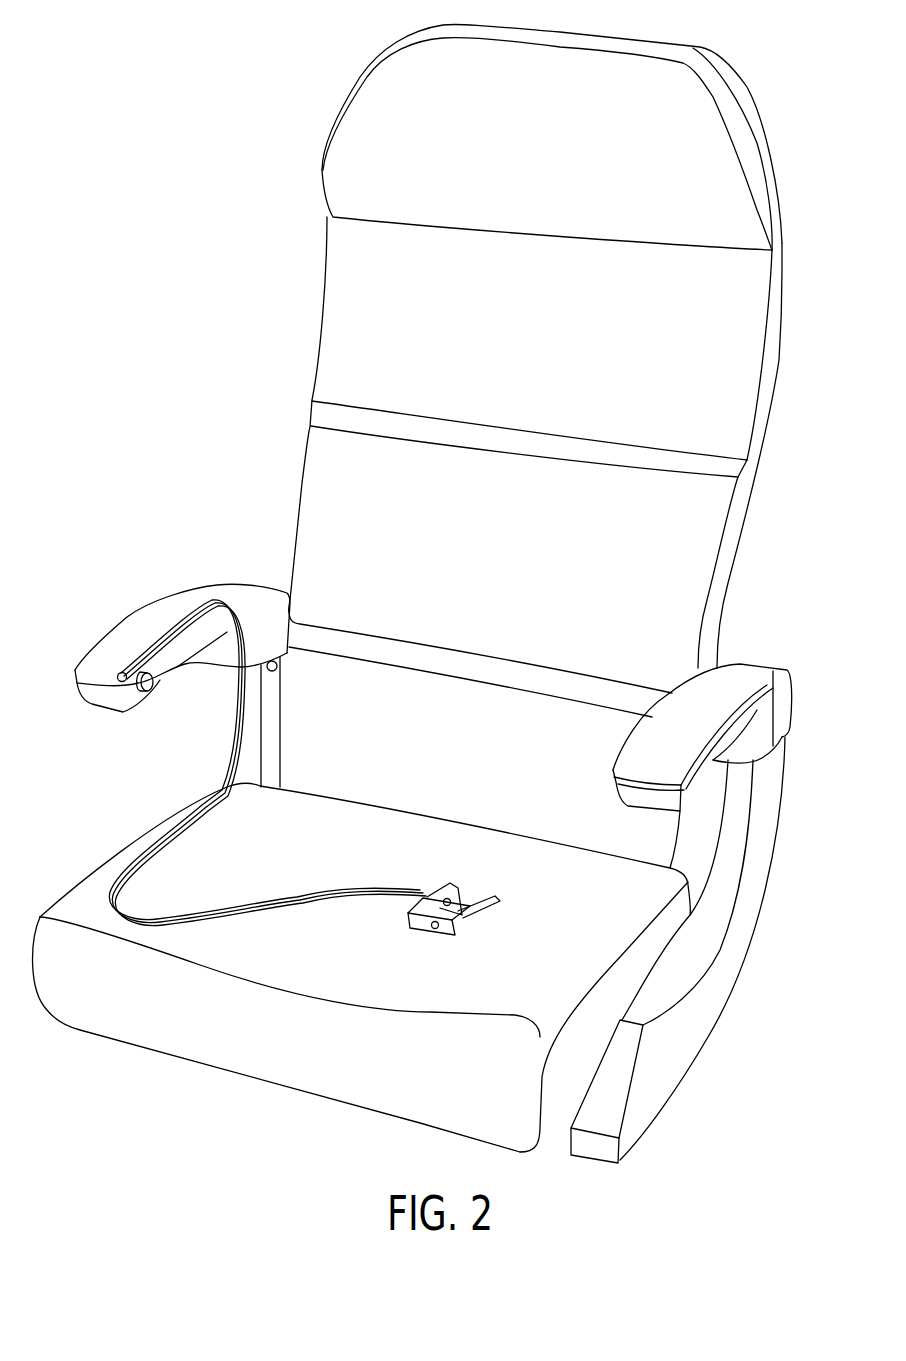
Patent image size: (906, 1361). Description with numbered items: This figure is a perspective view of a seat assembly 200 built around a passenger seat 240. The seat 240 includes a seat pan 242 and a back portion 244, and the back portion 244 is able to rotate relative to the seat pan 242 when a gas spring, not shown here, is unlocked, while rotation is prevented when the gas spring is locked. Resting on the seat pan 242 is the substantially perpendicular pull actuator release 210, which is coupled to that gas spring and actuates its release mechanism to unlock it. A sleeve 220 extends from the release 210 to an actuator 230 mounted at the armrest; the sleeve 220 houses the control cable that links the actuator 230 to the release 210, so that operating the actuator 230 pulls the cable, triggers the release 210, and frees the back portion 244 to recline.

The seat assembly 200 is at (122, 119).
The substantially perpendicular pull actuator release 210 is at (467, 927).
The sleeve 220 is at (200, 603).
The actuator 230 is at (119, 673).
The seat 240 is at (100, 697).
The seat pan 242 is at (260, 1062).
The back portion 244 is at (368, 122).